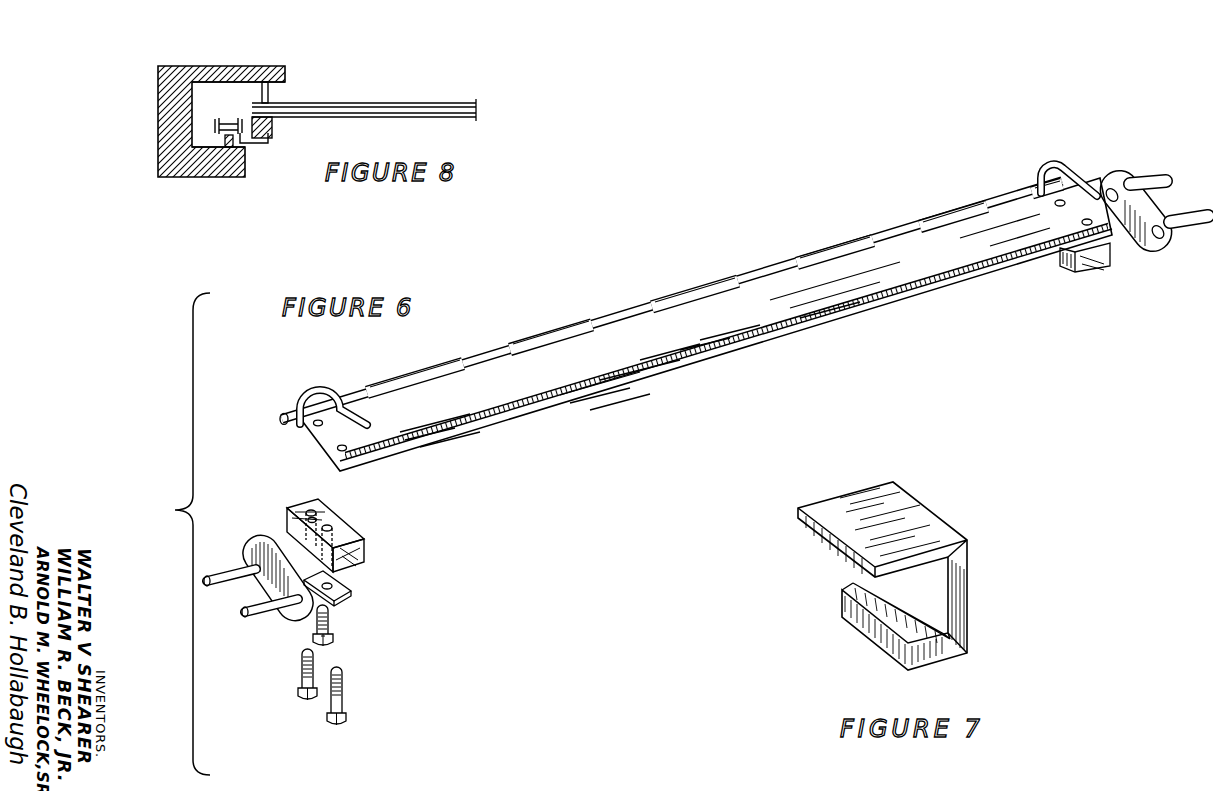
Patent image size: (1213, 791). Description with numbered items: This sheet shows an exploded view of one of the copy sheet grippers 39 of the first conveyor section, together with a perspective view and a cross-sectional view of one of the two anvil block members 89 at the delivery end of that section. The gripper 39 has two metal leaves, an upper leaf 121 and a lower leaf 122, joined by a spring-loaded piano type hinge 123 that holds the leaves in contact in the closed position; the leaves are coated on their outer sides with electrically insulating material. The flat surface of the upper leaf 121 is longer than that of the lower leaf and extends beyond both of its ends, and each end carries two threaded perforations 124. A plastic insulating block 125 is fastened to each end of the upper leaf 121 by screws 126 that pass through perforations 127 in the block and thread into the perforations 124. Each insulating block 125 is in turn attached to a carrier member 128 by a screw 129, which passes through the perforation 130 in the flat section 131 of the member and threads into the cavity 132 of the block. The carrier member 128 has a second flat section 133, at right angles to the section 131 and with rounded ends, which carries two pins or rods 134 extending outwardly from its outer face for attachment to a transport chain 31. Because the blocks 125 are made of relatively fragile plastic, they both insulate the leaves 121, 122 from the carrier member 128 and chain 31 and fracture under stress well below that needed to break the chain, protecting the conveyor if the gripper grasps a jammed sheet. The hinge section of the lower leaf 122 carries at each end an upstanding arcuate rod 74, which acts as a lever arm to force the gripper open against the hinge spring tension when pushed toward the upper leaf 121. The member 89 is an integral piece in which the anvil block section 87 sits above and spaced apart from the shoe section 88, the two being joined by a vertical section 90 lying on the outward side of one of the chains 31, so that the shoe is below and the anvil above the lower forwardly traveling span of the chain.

In FIG. 8, the transport chain 31 is at (233, 120).
In FIG. 8, the copy sheet gripper 39 is at (416, 102).
In FIG. 6, the copy sheet gripper 39 is at (668, 292).
In FIG. 8, the upstanding arcuate rod 74 is at (273, 92).
In FIG. 6, the upstanding arcuate rod 74 is at (318, 392).
In FIG. 8, the anvil block 87 is at (206, 66).
In FIG. 7, the anvil block 87 is at (842, 492).
In FIG. 8, the shoe 88 is at (249, 145).
In FIG. 7, the shoe 88 is at (870, 606).
In FIG. 8, the member 89 is at (156, 91).
In FIG. 7, the member 89 is at (984, 580).
In FIG. 8, the vertical section 90 is at (158, 129).
In FIG. 7, the vertical section 90 is at (968, 637).
In FIG. 6, the upper leaf 121 is at (783, 302).
In FIG. 6, the lower leaf 122 is at (906, 300).
In FIG. 6, the piano type hinge 123 is at (546, 331).
In FIG. 6, the threaded perforation 124 is at (313, 427).
In FIG. 6, the plastic insulating block 125 is at (1103, 272).
In FIG. 6, the screw 126 is at (340, 682).
In FIG. 6, the perforation 127 is at (323, 508).
In FIG. 6, the carrier member 128 is at (249, 542).
In FIG. 6, the screw 129 is at (331, 628).
In FIG. 6, the perforation 130 is at (347, 593).
In FIG. 6, the flat section 131 is at (330, 575).
In FIG. 6, the cavity 132 is at (322, 517).
In FIG. 6, the second flat section 133 is at (248, 583).
In FIG. 6, the pin or rod 134 is at (273, 610).